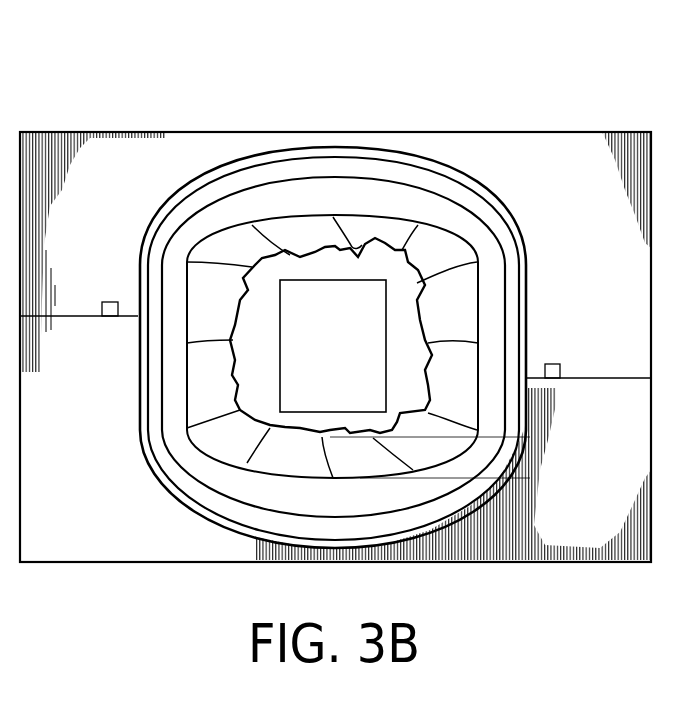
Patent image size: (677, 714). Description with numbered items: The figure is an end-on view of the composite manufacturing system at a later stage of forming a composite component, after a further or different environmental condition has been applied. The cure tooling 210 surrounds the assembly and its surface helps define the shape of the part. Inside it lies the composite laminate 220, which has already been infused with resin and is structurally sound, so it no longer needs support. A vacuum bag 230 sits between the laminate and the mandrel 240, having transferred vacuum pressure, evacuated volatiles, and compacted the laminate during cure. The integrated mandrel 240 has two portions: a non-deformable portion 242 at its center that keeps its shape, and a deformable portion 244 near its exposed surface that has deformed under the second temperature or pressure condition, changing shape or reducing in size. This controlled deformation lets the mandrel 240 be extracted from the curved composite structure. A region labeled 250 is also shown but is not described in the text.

The cure tooling 210 is at (100, 172).
The composite laminate 220 is at (275, 204).
The vacuum bag 230 is at (355, 215).
The mandrel 240 is at (238, 418).
The non-deformable portion 242 is at (333, 346).
The deformable portion 244 is at (237, 318).
The raised substrate portion 250 is at (521, 455).